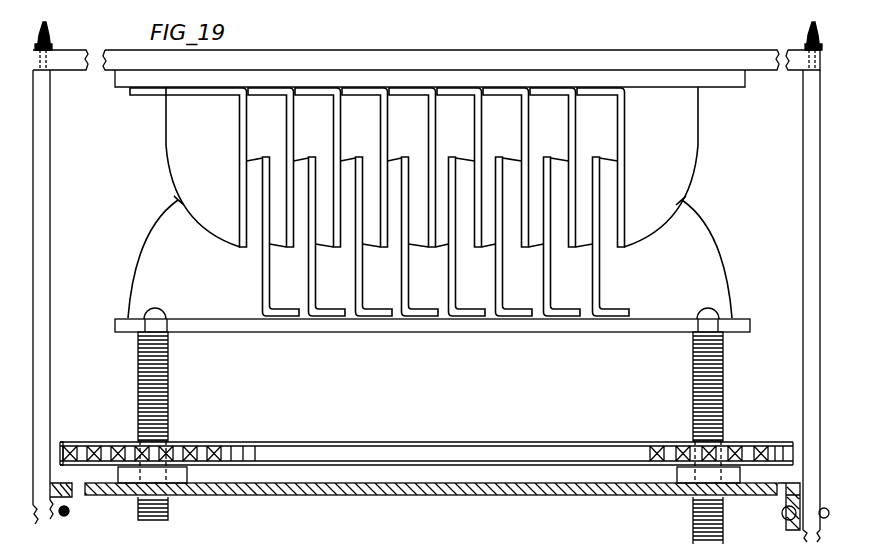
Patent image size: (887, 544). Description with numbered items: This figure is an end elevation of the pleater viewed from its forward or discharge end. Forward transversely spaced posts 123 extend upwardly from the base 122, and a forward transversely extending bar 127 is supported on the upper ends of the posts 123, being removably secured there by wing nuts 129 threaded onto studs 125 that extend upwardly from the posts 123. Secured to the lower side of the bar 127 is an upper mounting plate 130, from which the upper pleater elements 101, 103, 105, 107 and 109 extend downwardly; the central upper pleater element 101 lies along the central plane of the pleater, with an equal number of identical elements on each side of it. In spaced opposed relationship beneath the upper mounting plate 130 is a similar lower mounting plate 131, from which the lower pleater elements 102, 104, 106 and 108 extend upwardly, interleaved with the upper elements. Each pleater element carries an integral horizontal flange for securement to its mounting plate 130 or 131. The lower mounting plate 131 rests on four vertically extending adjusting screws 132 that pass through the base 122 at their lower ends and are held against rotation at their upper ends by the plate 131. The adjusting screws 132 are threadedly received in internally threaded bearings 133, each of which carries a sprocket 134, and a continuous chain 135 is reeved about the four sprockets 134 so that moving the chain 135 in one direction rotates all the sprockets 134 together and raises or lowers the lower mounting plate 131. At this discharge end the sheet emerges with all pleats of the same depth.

The central upper pleater element 101 is at (429, 90).
The lower pleater element 102 is at (447, 308).
The upper pleater element 103 is at (392, 100).
The lower pleater element 104 is at (350, 308).
The upper pleater element 105 is at (345, 100).
The lower pleater element 106 is at (301, 308).
The upper pleater element 107 is at (298, 100).
The lower pleater element 108 is at (152, 253).
The upper pleater element 109 is at (170, 142).
The base 122 is at (470, 490).
The forward transversely spaced posts 123 is at (804, 210).
The studs 125 is at (46, 30).
The forward transversely extending bar 127 is at (640, 60).
The wing nuts 129 is at (54, 46).
The upper mounting plate 130 is at (118, 86).
The lower mounting plate 131 is at (206, 320).
The adjusting screws 132 is at (138, 378).
The internally threaded bearings 133 is at (178, 474).
The sprocket 134 is at (60, 455).
The continuous chain 135 is at (368, 443).